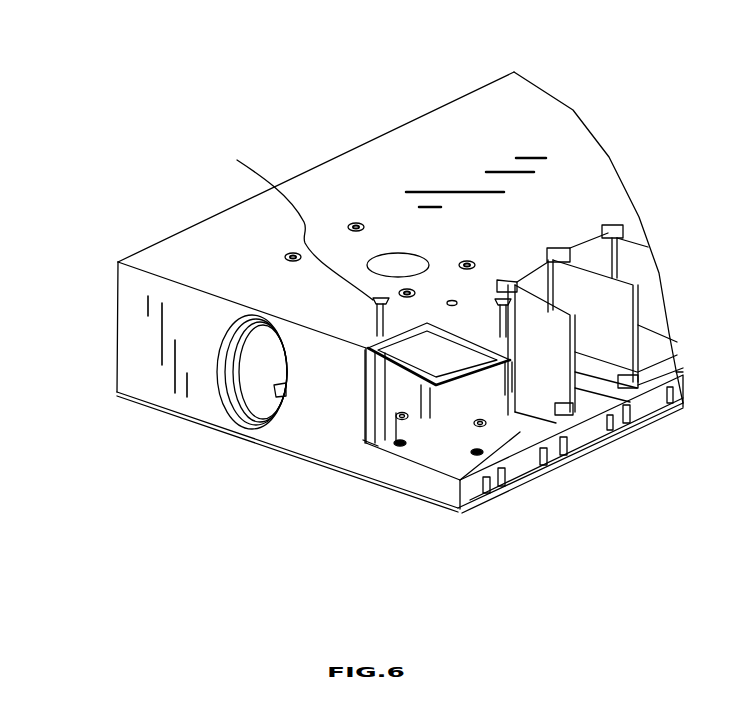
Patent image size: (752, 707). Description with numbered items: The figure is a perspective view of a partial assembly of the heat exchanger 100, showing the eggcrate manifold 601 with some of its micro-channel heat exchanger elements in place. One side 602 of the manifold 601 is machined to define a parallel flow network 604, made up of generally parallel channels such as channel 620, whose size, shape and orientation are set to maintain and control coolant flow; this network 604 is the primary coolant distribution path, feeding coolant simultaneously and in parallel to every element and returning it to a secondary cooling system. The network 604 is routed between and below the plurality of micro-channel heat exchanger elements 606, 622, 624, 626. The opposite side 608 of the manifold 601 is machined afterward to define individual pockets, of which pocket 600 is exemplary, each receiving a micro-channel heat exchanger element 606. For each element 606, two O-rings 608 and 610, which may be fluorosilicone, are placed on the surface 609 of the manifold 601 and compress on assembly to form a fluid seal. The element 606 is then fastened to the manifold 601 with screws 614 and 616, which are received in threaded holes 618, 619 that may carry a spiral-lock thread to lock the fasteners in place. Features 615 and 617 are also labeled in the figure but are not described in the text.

The heat exchanger 100 is at (160, 106).
The pocket 600 is at (586, 311).
The manifold 601 is at (575, 108).
The side 602 is at (610, 437).
The parallel flow network 604 is at (553, 479).
The micro-channel heat exchanger element 606 is at (443, 357).
The O-ring 608 is at (466, 120).
The surface 609 is at (433, 452).
The O-ring 610 is at (368, 419).
The screw 614 is at (296, 220).
The lens ring 615 is at (247, 423).
The screw 616 is at (498, 280).
The screw 617 is at (487, 335).
The threaded hole 618 is at (320, 455).
The threaded hole 619 is at (480, 505).
The channel 620 is at (673, 388).
The micro-channel heat exchanger element 622 is at (543, 414).
The micro-channel heat exchanger element 624 is at (580, 382).
The micro-channel heat exchanger element 626 is at (648, 330).